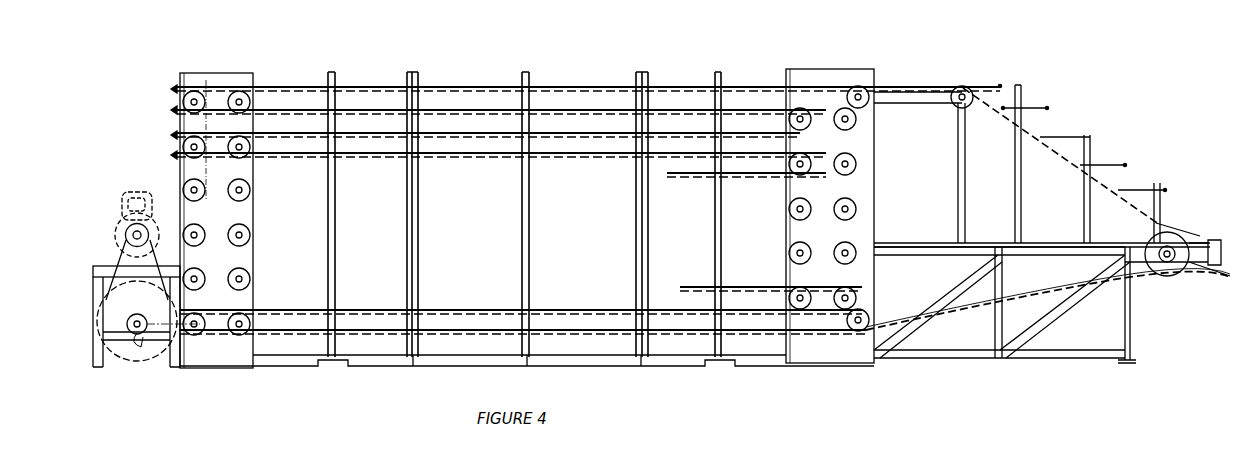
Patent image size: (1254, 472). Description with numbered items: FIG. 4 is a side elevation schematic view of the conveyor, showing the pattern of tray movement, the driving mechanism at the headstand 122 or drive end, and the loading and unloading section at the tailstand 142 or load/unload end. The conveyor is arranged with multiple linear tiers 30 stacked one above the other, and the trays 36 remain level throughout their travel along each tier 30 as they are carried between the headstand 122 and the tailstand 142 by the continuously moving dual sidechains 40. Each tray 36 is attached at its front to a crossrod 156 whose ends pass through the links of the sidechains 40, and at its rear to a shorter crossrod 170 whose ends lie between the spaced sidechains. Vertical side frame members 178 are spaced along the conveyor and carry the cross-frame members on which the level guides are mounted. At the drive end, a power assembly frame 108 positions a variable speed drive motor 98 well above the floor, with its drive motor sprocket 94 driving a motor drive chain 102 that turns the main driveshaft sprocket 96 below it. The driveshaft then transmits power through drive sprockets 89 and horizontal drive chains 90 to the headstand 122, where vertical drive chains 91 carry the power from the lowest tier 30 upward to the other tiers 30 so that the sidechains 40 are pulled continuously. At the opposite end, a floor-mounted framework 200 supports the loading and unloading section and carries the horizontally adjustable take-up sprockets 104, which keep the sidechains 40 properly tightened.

The linear tier 30 is at (176, 108).
The tray 36 is at (450, 82).
The dual sidechain 40 is at (354, 160).
The drive sprocket 89 is at (130, 342).
The horizontal drive chain 90 is at (158, 346).
The vertical drive chain 91 is at (206, 196).
The drive motor sprocket 94 is at (126, 236).
The main driveshaft sprocket 96 is at (94, 344).
The variable speed drive motor 98 is at (122, 208).
The motor drive chain 102 is at (92, 268).
The take-up sprocket 104 is at (1190, 270).
The power assembly frame 108 is at (92, 362).
The headstand 122 is at (249, 72).
The tailstand 142 is at (840, 66).
The crossrod 156 is at (1010, 310).
The crossrod 170 is at (1033, 298).
The vertical side frame member 178 is at (334, 72).
The framework 200 is at (1016, 358).